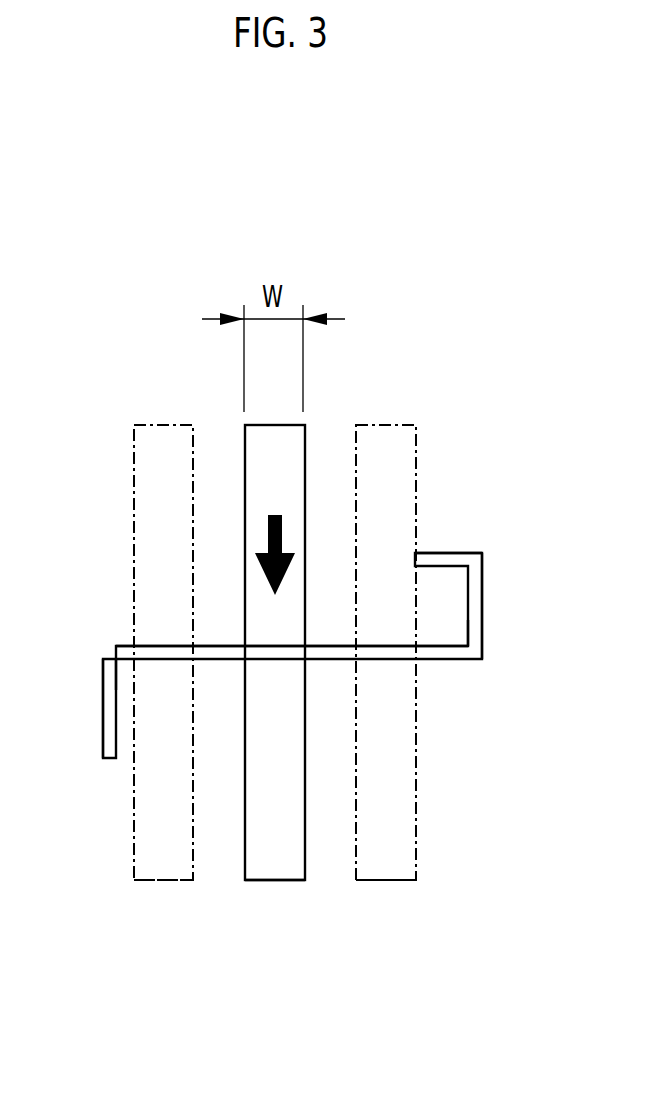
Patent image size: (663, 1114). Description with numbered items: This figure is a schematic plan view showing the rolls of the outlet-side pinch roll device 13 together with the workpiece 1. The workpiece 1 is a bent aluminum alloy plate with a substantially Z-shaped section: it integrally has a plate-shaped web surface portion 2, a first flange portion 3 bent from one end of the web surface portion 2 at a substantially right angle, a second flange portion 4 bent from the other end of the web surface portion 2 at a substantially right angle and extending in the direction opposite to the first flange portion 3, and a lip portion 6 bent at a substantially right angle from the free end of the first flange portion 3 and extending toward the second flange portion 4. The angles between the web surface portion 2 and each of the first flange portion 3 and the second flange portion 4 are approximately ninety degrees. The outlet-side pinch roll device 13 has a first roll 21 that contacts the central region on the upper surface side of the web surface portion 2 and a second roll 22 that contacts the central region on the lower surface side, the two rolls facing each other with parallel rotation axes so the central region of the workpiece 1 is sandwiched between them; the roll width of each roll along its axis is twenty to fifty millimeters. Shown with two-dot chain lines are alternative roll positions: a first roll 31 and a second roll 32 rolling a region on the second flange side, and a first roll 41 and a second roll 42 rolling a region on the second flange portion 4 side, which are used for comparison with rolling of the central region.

The outlet-side pinch roll device 13 is at (452, 312).
The first roll 41 is at (163, 425).
The second roll 42 is at (163, 880).
The first roll 21 is at (245, 462).
The second roll 22 is at (275, 880).
The first roll 31 is at (395, 425).
The second roll 32 is at (388, 880).
The workpiece 1 is at (505, 633).
The web surface portion 2 is at (335, 650).
The first flange portion 3 is at (478, 580).
The lip portion 6 is at (447, 553).
The second flange portion 4 is at (103, 730).